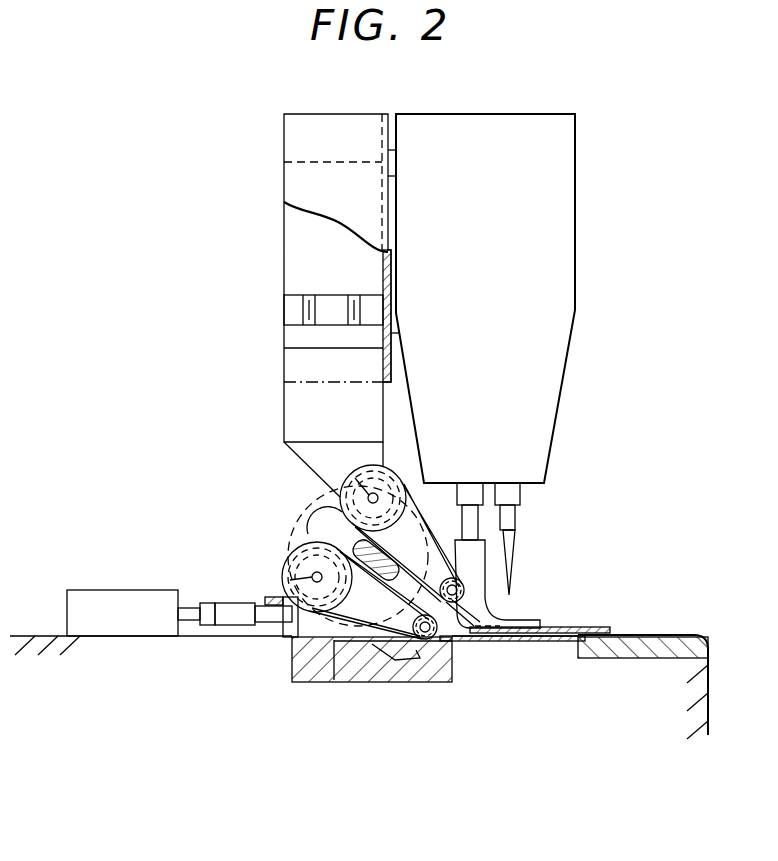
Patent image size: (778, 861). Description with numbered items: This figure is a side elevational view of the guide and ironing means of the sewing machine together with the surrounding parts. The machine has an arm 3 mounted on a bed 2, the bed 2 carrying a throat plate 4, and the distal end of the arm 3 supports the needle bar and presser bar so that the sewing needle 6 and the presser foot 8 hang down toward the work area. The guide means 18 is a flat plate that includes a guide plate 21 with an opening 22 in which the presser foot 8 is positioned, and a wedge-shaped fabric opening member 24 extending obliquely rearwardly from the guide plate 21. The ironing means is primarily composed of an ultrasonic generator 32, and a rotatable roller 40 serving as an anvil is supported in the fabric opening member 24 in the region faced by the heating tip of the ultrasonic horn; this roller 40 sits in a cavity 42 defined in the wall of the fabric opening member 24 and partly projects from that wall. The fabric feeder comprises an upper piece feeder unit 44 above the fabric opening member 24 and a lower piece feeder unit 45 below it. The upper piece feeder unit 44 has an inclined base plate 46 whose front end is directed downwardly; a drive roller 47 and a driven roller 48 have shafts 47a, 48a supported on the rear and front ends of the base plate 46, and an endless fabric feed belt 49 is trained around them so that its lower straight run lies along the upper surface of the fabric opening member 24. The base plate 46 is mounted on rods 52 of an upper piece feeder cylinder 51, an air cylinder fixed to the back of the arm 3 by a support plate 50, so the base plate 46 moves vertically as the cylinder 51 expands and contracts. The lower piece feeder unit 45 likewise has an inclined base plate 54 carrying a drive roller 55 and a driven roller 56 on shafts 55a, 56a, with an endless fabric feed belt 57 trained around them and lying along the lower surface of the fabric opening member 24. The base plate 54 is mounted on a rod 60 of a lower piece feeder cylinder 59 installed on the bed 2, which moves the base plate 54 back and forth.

The bed 2 is at (676, 636).
The arm 3 is at (553, 207).
The throat plate 4 is at (534, 644).
The sewing needle 6 is at (511, 550).
The presser foot 8 is at (493, 640).
The guide means 18 is at (580, 630).
The guide plate 21 is at (600, 628).
The opening 22 is at (552, 628).
The wedge-shaped fabric opening member 24 is at (318, 520).
The ultrasonic generator 32 is at (302, 497).
The rotatable roller 40 is at (350, 550).
The cavity 42 is at (395, 662).
The upper piece feeder unit 44 is at (398, 462).
The lower piece feeder unit 45 is at (290, 640).
The base plate 46 is at (318, 466).
The drive roller 47 is at (408, 470).
The shaft 47a is at (360, 478).
The driven roller 48 is at (480, 574).
The shaft 48a is at (465, 592).
The endless fabric feed belt 49 is at (432, 536).
The support plate 50 is at (294, 143).
The upper piece feeder cylinder 51 is at (282, 272).
The rods 52 is at (302, 313).
The base plate 54 is at (322, 642).
The drive roller 55 is at (286, 570).
The shaft 55a is at (300, 582).
The driven roller 56 is at (425, 640).
The shaft 56a is at (436, 652).
The endless fabric feed belt 57 is at (360, 650).
The lower piece feeder cylinder 59 is at (106, 585).
The rod 60 is at (235, 628).